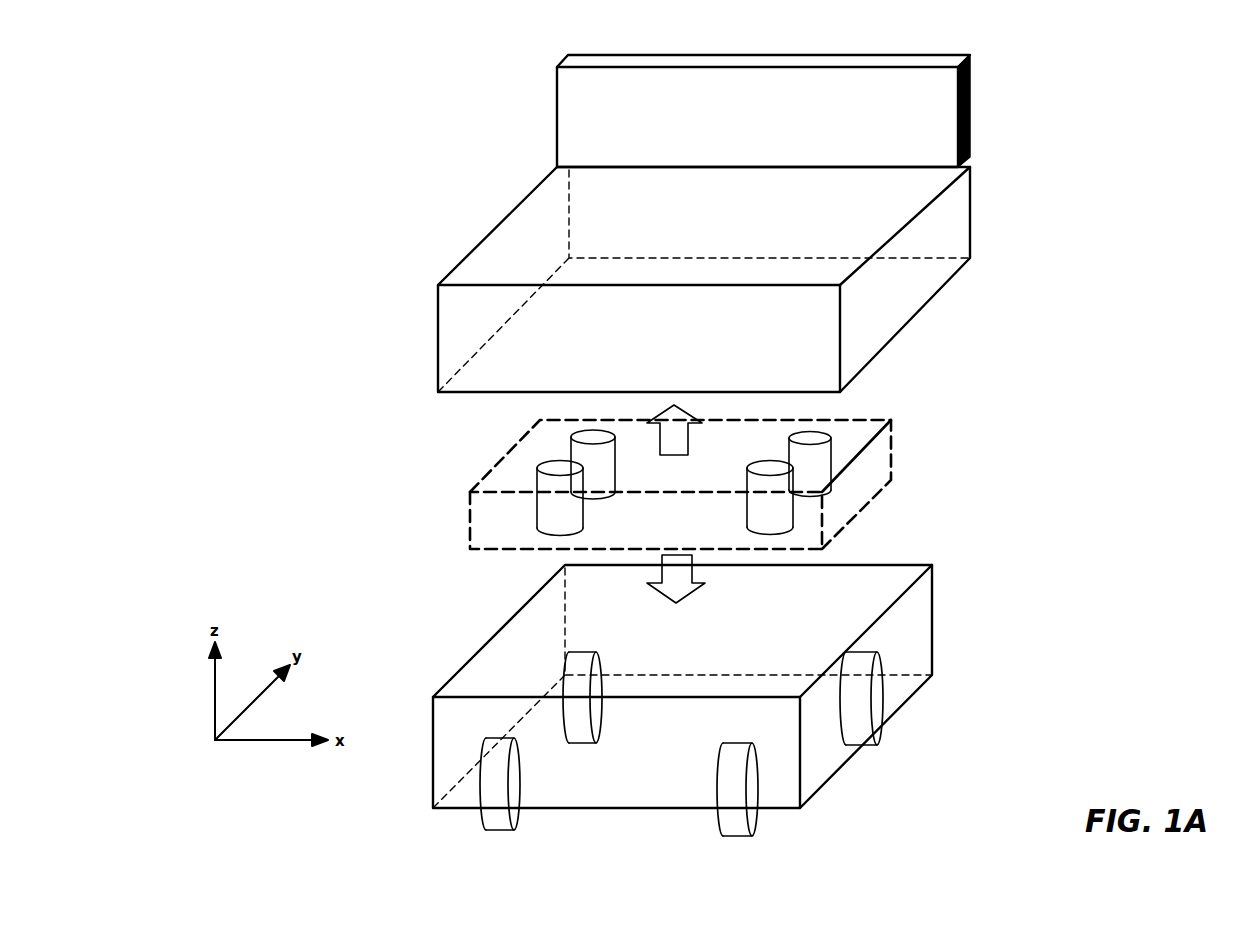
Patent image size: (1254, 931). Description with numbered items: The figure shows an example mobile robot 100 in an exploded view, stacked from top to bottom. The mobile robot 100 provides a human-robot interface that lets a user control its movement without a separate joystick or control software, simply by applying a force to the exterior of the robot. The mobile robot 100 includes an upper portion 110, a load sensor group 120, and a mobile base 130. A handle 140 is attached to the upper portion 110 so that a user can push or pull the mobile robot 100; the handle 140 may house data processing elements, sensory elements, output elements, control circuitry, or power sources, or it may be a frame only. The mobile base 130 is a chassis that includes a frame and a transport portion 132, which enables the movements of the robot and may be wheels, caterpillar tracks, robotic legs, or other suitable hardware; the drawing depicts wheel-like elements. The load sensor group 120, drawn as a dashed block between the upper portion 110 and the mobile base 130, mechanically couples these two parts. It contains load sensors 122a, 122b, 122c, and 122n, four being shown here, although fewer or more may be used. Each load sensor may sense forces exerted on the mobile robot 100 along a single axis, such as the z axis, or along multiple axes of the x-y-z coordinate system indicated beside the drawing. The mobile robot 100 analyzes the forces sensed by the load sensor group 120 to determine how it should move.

The mobile robot 100 is at (259, 60).
The upper portion 110 is at (500, 233).
The load sensor group 120 is at (488, 472).
The load sensor 122a is at (785, 520).
The load sensor 122b is at (547, 509).
The load sensor 122c is at (588, 432).
The load sensor 122n is at (818, 437).
The mobile base 130 is at (478, 658).
The transport portion 132 is at (483, 818).
The handle 140 is at (568, 53).